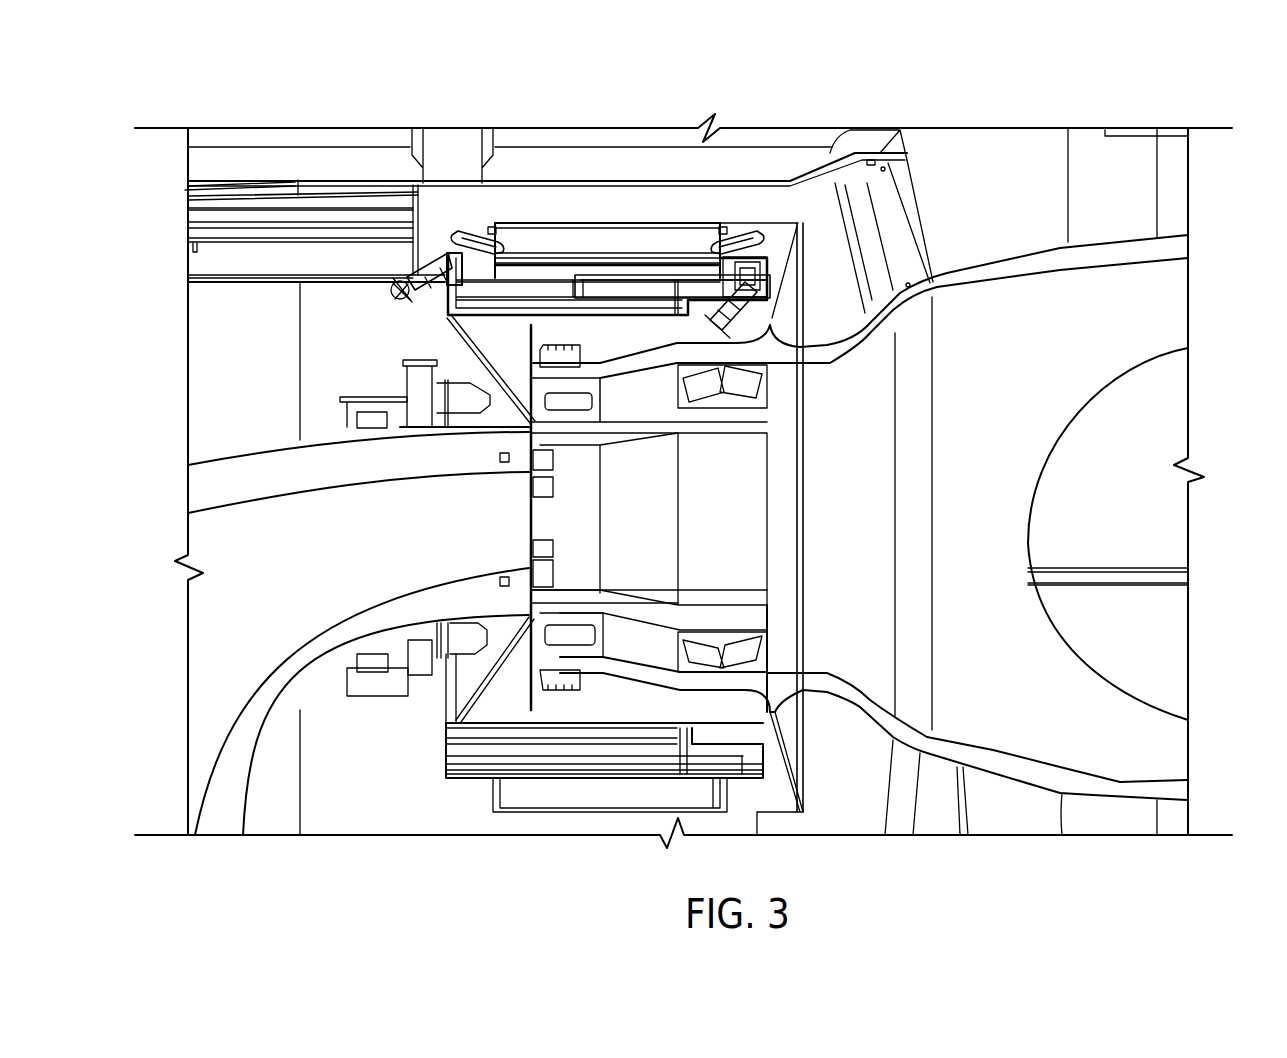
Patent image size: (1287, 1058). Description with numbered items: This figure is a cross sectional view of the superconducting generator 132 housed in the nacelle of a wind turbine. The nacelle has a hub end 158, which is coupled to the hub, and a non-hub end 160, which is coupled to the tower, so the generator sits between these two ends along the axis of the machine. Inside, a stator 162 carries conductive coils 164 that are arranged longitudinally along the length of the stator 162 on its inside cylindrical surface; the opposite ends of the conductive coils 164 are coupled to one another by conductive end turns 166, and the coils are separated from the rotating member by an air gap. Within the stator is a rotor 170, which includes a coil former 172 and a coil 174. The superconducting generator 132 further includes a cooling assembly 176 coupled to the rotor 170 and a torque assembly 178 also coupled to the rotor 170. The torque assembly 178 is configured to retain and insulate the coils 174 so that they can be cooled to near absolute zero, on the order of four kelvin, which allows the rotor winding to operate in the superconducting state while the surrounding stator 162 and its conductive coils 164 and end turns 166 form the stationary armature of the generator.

The superconducting generator 132 is at (321, 82).
The hub end 158 is at (1192, 212).
The non-hub end 160 is at (186, 747).
The stator 162 is at (510, 233).
The conductive coils 164 is at (547, 240).
The conductive end turns 166 is at (455, 232).
The rotor 170 is at (737, 237).
The coil former 172 is at (627, 277).
The coil 174 is at (745, 277).
The cooling assembly 176 is at (410, 253).
The torque assembly 178 is at (687, 297).